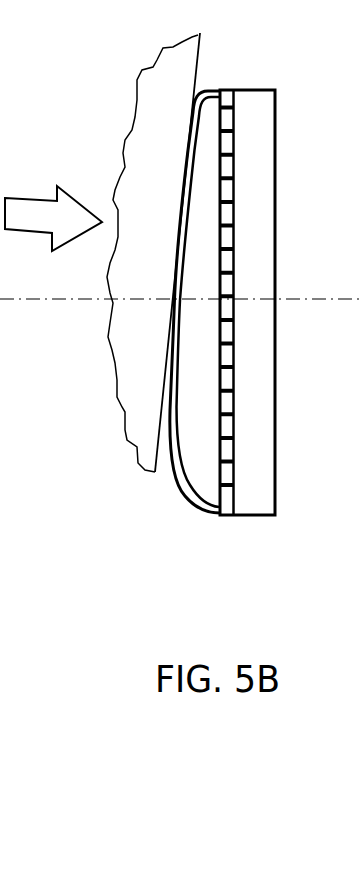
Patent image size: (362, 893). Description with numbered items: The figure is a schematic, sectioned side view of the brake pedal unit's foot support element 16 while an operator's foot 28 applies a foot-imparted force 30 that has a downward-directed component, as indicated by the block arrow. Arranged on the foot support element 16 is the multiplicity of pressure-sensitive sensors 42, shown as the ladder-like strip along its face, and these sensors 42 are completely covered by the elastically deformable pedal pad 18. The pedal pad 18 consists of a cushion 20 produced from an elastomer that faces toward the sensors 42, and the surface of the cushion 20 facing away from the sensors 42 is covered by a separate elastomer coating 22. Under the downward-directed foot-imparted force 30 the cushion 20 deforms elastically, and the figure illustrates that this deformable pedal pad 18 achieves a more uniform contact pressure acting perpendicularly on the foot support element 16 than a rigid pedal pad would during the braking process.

The foot support element 16 is at (263, 127).
The pedal pad 18 is at (148, 351).
The cushion 20 is at (197, 438).
The elastomer coating 22 is at (202, 511).
The operator's foot 28 is at (155, 147).
The foot-imparted force 30 is at (35, 213).
The pressure-sensitive sensors 42 is at (226, 397).